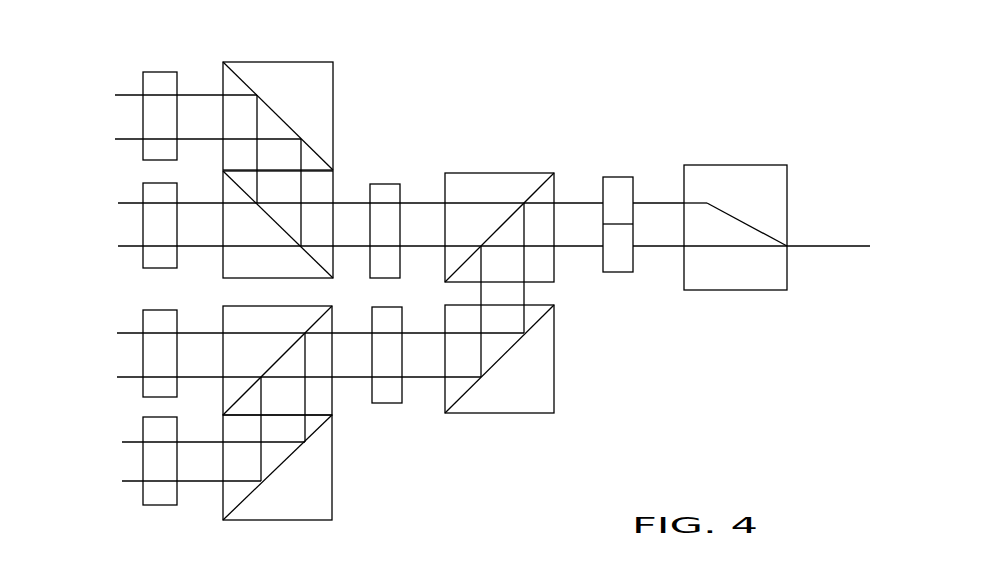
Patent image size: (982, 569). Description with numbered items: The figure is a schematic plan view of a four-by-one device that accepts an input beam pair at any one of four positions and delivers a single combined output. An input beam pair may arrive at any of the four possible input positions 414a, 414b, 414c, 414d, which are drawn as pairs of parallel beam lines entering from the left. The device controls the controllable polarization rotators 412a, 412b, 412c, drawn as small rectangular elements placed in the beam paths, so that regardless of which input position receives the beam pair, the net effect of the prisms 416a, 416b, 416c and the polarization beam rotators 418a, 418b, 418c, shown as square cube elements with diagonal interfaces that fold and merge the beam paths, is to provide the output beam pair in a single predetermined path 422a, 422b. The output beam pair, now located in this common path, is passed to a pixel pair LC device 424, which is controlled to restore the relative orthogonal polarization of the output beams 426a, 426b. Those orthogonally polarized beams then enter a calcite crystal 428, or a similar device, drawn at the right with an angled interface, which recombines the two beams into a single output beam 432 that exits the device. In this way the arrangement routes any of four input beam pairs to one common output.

The controllable polarization rotator 412a is at (158, 72).
The controllable polarization rotator 412b is at (163, 505).
The controllable polarization rotator 412c is at (395, 390).
The input position 414a is at (115, 80).
The input position 414b is at (118, 188).
The input position 414c is at (117, 319).
The input position 414d is at (122, 428).
The prism 416a is at (332, 99).
The prism 416b is at (323, 492).
The prism 416c is at (540, 388).
The polarization beam rotator 418a is at (325, 185).
The polarization beam rotator 418b is at (328, 320).
The polarization beam rotator 418c is at (458, 178).
The predetermined path 422a is at (582, 203).
The predetermined path 422b is at (568, 246).
The pixel pair LC device 424 is at (622, 180).
The output beam 426a is at (671, 202).
The output beam 426b is at (646, 247).
The calcite crystal 428 is at (783, 198).
The single output beam 432 is at (840, 246).